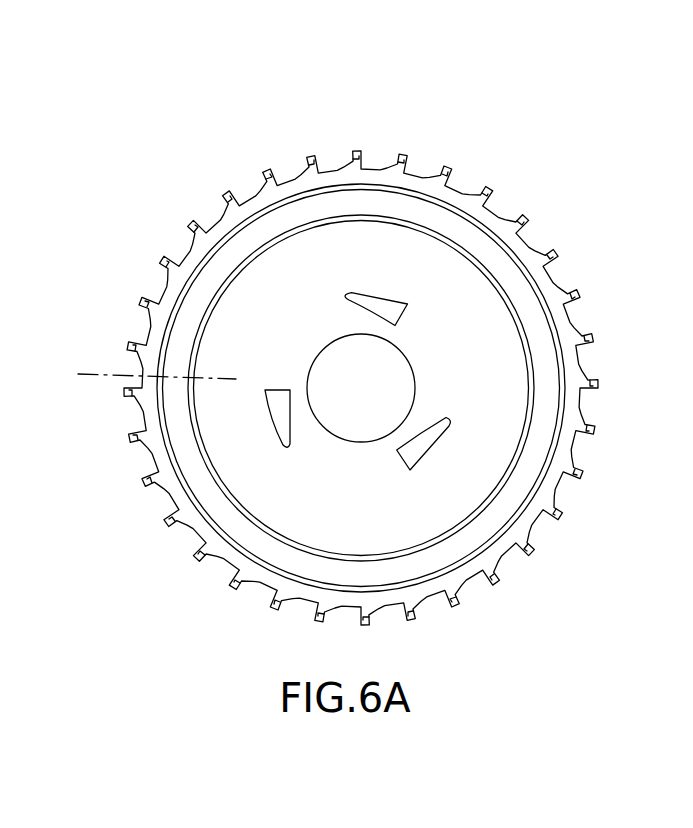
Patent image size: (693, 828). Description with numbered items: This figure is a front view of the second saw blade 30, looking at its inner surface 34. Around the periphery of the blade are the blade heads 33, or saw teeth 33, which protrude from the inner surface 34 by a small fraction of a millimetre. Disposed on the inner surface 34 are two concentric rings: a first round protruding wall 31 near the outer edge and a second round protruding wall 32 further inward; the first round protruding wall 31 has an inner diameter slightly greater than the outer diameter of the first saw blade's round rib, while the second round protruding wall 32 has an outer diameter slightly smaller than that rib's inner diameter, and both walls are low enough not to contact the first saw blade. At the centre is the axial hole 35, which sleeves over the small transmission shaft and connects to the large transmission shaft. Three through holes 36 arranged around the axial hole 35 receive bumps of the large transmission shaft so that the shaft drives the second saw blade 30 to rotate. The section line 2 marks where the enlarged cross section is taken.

The second saw blade 30 is at (377, 363).
The first round protruding wall 31 is at (562, 437).
The second round protruding wall 32 is at (528, 340).
The blade head 33 is at (585, 340).
The inner surface 34 is at (377, 346).
The axial hole 35 is at (403, 378).
The through holes 36 is at (378, 300).
The section line 2- 2 is at (86, 378).